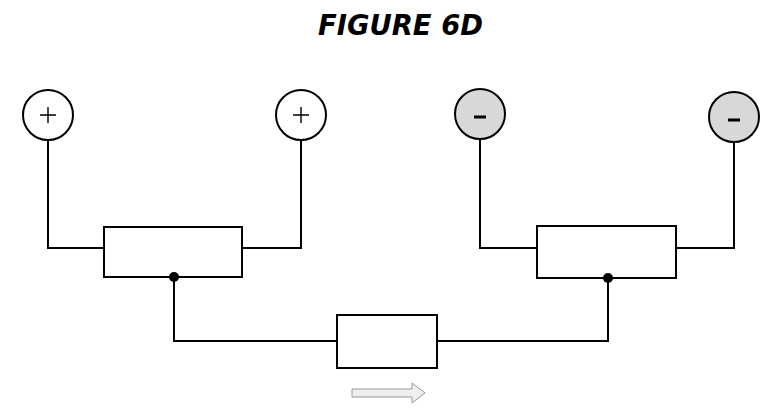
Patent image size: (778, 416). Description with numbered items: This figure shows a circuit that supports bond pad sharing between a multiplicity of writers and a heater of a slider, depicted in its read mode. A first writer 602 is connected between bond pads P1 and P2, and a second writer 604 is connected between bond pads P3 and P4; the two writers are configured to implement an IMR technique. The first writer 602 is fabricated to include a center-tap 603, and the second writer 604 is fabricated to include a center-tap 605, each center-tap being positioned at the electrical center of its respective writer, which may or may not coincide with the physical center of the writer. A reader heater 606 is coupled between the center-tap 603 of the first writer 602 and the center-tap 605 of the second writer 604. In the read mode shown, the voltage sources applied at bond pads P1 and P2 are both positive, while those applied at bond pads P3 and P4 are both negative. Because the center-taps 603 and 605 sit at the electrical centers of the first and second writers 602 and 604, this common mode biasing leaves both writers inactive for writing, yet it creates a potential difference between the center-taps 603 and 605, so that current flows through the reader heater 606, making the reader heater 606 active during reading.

The first writer 602 is at (156, 227).
The center-tap 603 is at (172, 284).
The second writer 604 is at (627, 226).
The center-tap 605 is at (606, 284).
The reader heater 606 is at (380, 315).
The bond pad P1 is at (74, 115).
The bond pad P2 is at (275, 115).
The bond pad P3 is at (506, 113).
The bond pad P4 is at (708, 115).